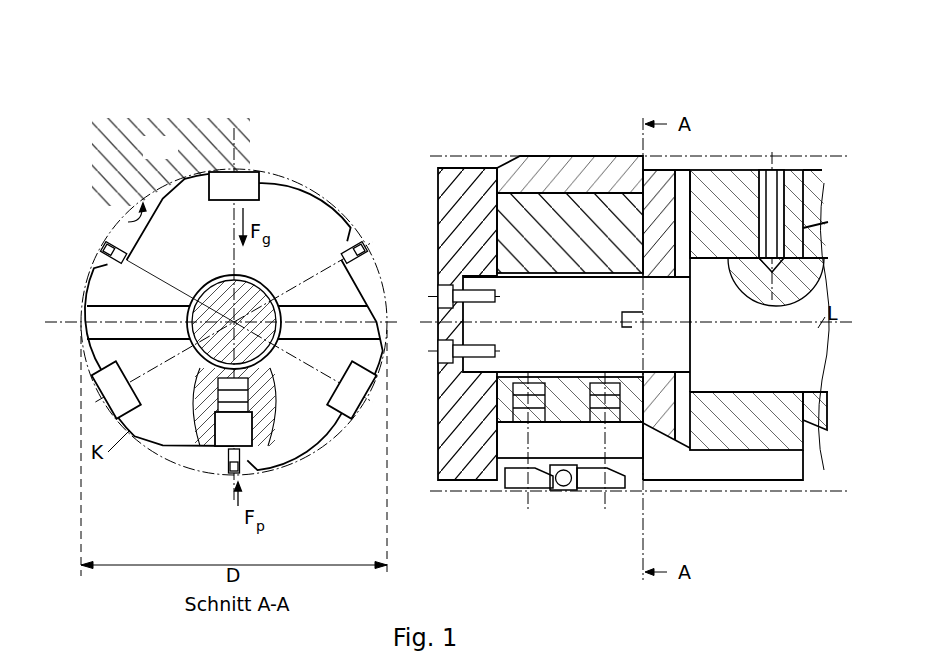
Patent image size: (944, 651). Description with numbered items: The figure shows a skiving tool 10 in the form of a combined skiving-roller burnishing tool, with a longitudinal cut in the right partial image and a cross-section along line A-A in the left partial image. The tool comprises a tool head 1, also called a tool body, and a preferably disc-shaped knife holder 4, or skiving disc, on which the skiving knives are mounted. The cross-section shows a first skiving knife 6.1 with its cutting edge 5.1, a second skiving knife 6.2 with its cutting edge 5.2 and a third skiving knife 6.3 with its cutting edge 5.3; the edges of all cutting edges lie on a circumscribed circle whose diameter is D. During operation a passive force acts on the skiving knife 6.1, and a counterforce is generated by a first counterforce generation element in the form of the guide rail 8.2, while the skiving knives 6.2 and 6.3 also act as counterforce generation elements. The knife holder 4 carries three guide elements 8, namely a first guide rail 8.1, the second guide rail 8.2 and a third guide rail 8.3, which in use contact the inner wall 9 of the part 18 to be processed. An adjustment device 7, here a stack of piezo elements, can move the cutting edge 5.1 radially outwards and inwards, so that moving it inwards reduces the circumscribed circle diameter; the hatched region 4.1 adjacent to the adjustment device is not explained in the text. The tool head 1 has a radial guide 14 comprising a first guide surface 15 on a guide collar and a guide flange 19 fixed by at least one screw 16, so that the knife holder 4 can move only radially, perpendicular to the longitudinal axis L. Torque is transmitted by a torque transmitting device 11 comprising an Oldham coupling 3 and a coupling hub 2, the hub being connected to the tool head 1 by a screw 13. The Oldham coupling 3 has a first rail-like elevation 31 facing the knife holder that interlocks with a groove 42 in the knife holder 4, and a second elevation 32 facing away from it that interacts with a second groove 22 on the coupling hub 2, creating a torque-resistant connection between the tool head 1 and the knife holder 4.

The tool head 1 is at (724, 375).
The coupling hub 2 is at (777, 430).
The Oldham coupling 3 is at (278, 208).
The knife holder 4 is at (310, 415).
The recess 4.1 is at (203, 445).
The cutting edge 5.1 is at (232, 472).
The cutting edge 5.2 is at (113, 246).
The cutting edge 5.3 is at (363, 240).
The skiving knife 6.1 is at (250, 472).
The second skiving knife 6.2 is at (122, 258).
The third skiving knife 6.3 is at (346, 243).
The adjustment device 7 is at (214, 442).
The guide elements 8 is at (542, 213).
The first guide rail 8.1 is at (102, 408).
The second guide rail 8.2 is at (246, 176).
The third guide rail 8.3 is at (358, 410).
The inner wall 9 is at (130, 208).
The skiving tool 10 is at (768, 95).
The torque transmitting device 11 is at (804, 494).
The screw 13 is at (783, 180).
The radial guide 14 is at (685, 70).
The first guide surface 15 is at (632, 222).
The screw 16 is at (447, 285).
The part to be processed 18 is at (171, 162).
The guide flange 19 is at (463, 450).
The second groove 22 is at (683, 180).
The first rail-like elevation 31 is at (620, 332).
The second elevation 32 is at (700, 380).
The groove 42 is at (113, 306).